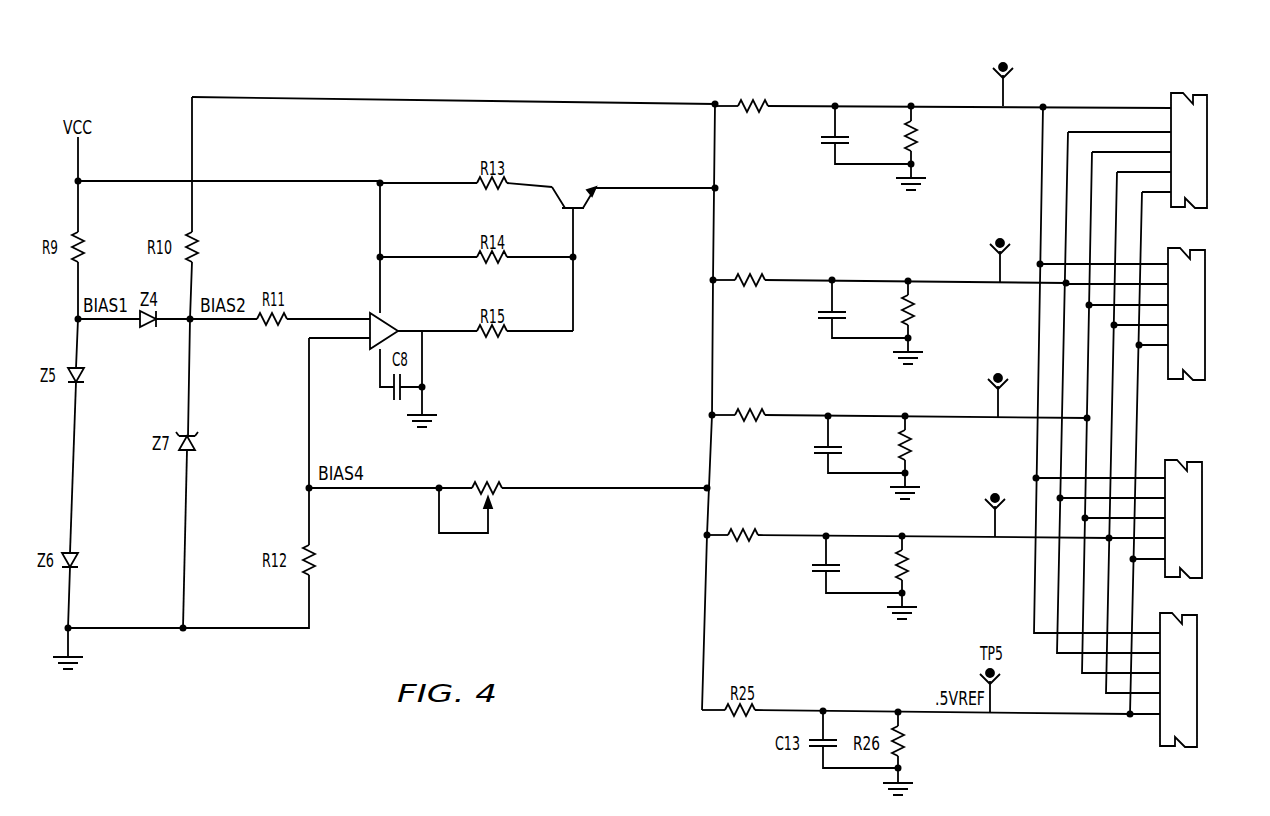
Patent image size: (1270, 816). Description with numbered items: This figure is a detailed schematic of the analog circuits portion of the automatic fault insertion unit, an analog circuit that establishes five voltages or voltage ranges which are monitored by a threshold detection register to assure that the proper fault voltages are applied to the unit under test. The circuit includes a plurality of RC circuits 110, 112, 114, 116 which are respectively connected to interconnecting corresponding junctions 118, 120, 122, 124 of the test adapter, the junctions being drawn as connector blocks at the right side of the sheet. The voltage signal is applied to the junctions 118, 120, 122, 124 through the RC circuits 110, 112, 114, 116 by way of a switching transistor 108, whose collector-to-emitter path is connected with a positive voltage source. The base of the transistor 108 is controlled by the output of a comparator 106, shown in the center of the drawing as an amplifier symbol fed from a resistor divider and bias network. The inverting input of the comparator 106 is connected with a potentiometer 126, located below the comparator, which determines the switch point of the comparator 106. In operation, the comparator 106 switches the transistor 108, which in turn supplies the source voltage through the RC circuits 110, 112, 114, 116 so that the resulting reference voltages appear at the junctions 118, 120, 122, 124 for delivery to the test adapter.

The comparator 106 is at (386, 323).
The switching transistor 108 is at (585, 194).
The RC circuit 110 is at (888, 101).
The RC circuit 112 is at (834, 351).
The RC circuit 114 is at (800, 470).
The RC circuit 116 is at (808, 615).
The junction 118 is at (1208, 137).
The junction 120 is at (1206, 312).
The junction 122 is at (1203, 525).
The junction 124 is at (1198, 710).
The potentiometer 126 is at (473, 534).